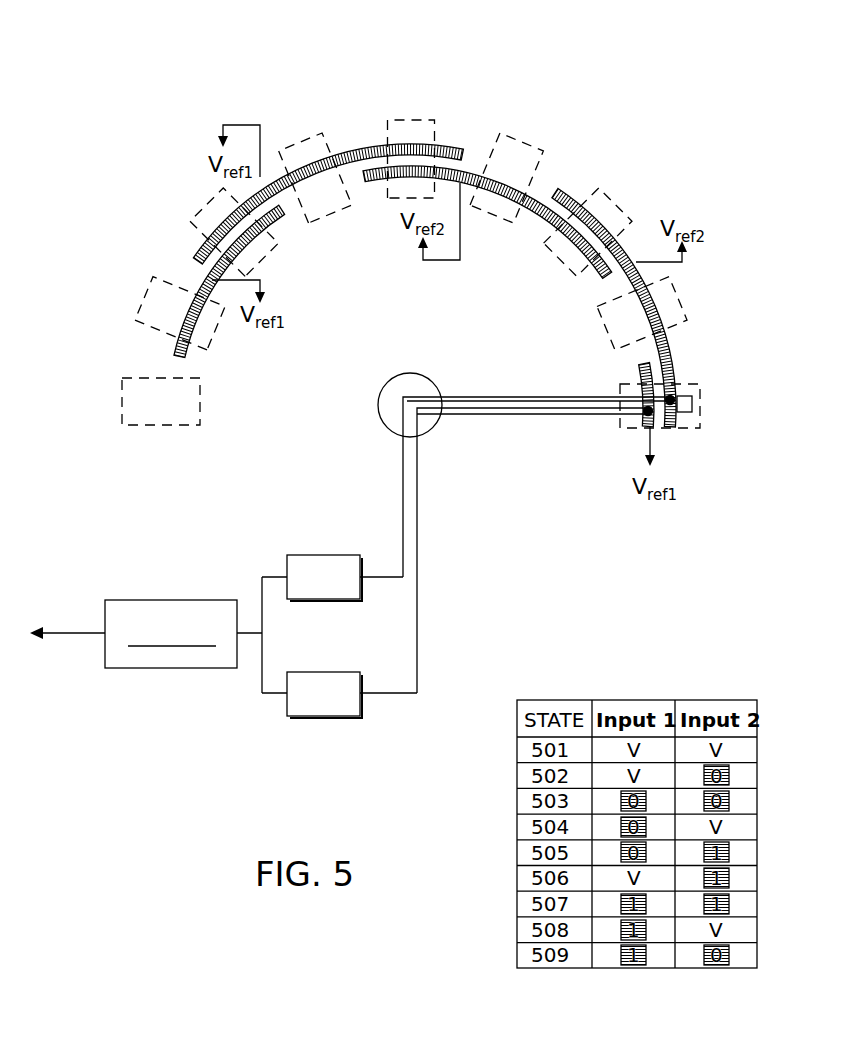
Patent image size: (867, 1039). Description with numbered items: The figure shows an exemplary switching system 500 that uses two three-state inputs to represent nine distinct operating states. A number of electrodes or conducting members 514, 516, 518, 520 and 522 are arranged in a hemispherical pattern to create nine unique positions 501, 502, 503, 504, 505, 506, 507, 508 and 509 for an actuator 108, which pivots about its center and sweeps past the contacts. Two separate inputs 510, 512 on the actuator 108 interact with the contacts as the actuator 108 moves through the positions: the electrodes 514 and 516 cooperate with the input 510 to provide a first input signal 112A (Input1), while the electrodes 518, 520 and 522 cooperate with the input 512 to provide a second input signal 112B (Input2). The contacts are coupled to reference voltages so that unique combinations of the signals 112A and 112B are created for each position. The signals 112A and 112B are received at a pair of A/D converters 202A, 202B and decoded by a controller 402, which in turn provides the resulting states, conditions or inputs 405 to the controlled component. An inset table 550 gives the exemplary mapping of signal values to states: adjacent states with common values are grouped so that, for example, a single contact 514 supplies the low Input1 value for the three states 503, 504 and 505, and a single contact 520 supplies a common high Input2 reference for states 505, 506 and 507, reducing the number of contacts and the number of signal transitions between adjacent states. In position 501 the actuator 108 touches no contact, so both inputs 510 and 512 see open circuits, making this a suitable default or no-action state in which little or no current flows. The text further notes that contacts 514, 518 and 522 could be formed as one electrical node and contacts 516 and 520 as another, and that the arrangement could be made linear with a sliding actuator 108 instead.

The switching system 500 is at (650, 58).
The inset table 550 is at (716, 612).
The actuator position 501 is at (121, 393).
The actuator position 502 is at (140, 300).
The actuator position 503 is at (196, 205).
The actuator position 504 is at (300, 140).
The actuator position 505 is at (408, 118).
The actuator position 506 is at (516, 140).
The actuator position 507 is at (622, 204).
The actuator position 508 is at (688, 305).
The actuator position 509 is at (704, 398).
The input 510 is at (678, 396).
The input 512 is at (645, 413).
The electrical contact 514 is at (287, 186).
The electrical contact 516 is at (630, 278).
The electrical contact 518 is at (189, 345).
The electrical contact 520 is at (540, 207).
The electrical contact 522 is at (640, 380).
The actuator 108 is at (408, 372).
The first input signal 112A is at (536, 396).
The second input signal 112B is at (527, 414).
The controller 402 is at (190, 600).
The inputs 405 is at (76, 630).
The A/D converter 202A is at (330, 554).
The A/D converter 202B is at (322, 717).